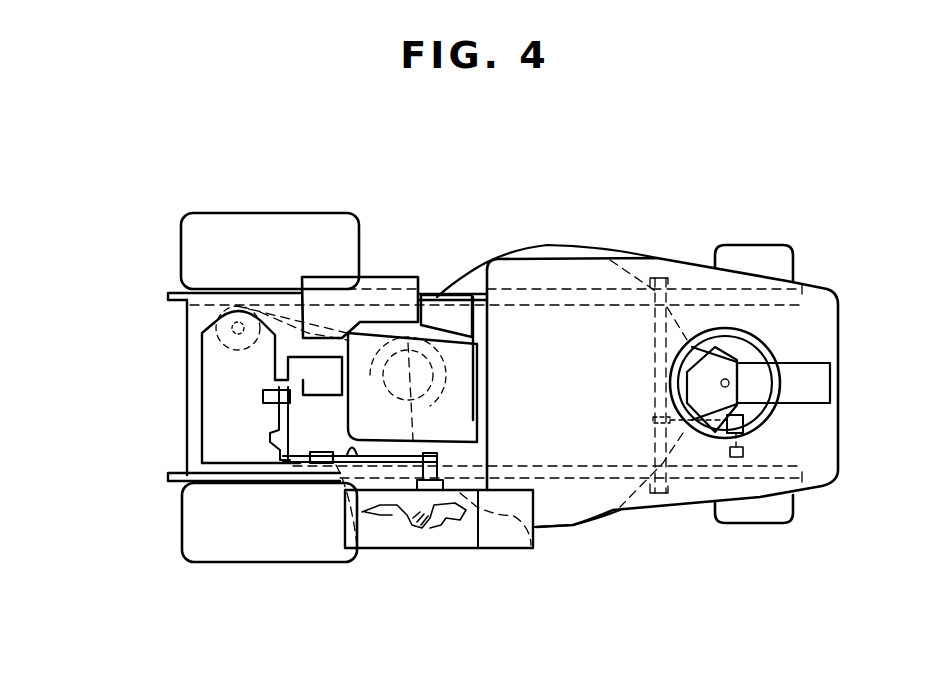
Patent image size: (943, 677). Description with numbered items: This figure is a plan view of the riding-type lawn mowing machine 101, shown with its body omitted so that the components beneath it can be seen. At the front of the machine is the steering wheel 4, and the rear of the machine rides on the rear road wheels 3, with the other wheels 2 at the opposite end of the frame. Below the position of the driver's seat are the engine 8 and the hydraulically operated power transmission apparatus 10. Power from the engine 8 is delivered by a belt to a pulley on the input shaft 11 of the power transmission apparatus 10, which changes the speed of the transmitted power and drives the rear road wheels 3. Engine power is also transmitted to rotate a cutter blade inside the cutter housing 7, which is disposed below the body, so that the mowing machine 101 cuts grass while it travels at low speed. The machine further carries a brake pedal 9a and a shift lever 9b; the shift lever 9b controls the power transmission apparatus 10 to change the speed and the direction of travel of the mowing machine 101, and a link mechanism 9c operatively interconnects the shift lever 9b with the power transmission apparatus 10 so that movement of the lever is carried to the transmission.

The riding-type lawn mowing machine 101 is at (592, 212).
The rear wheel 2 is at (749, 245).
The rear road wheels 3 is at (252, 213).
The steering wheel 4 is at (778, 412).
The cutter housing 7 is at (572, 530).
The engine 8 is at (477, 363).
The brake pedal 9a is at (740, 453).
The shift lever 9b is at (443, 548).
The link mechanism 9c is at (343, 470).
The hydraulically operated power transmission apparatus 10 is at (202, 392).
The input shaft 11 is at (217, 320).